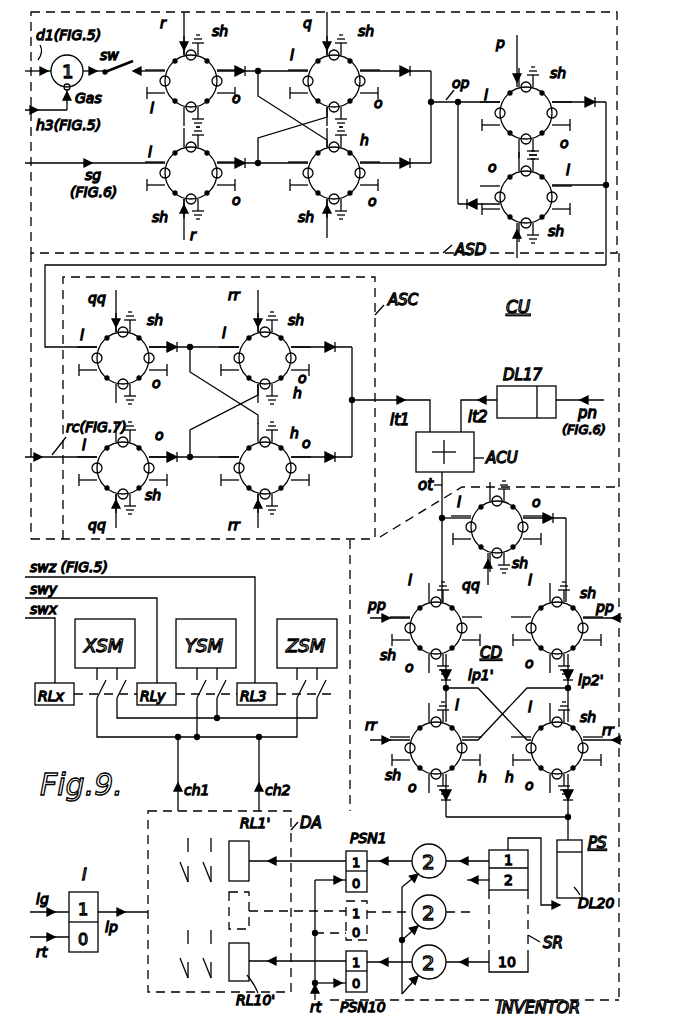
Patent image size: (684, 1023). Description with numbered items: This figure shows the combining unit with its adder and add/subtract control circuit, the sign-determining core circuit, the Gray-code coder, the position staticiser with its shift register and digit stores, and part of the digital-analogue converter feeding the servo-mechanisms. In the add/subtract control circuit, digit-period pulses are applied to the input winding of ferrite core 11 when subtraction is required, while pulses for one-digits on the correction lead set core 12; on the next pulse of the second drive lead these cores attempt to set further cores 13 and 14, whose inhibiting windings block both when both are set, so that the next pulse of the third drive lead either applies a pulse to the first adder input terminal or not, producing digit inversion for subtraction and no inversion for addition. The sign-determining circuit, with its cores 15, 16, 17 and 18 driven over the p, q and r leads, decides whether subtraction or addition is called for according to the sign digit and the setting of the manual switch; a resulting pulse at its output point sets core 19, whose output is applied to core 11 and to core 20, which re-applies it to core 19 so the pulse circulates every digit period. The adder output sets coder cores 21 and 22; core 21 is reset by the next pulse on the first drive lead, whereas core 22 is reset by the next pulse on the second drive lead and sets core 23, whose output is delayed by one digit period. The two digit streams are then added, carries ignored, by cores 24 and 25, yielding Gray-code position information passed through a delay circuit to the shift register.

The ferrite core 11 is at (130, 388).
The ferrite core 12 is at (123, 468).
The ferrite core 13 is at (244, 383).
The ferrite core 14 is at (282, 492).
The ferrite core 15 is at (197, 107).
The ferrite core 16 is at (214, 154).
The ferrite core 17 is at (358, 60).
The ferrite core 18 is at (312, 196).
The ferrite core 19 is at (520, 140).
The ferrite core 20 is at (526, 170).
The ferrite core 21 is at (460, 610).
The ferrite core 22 is at (478, 551).
The ferrite core 23 is at (534, 610).
The ferrite core 24 is at (436, 748).
The ferrite core 25 is at (557, 748).